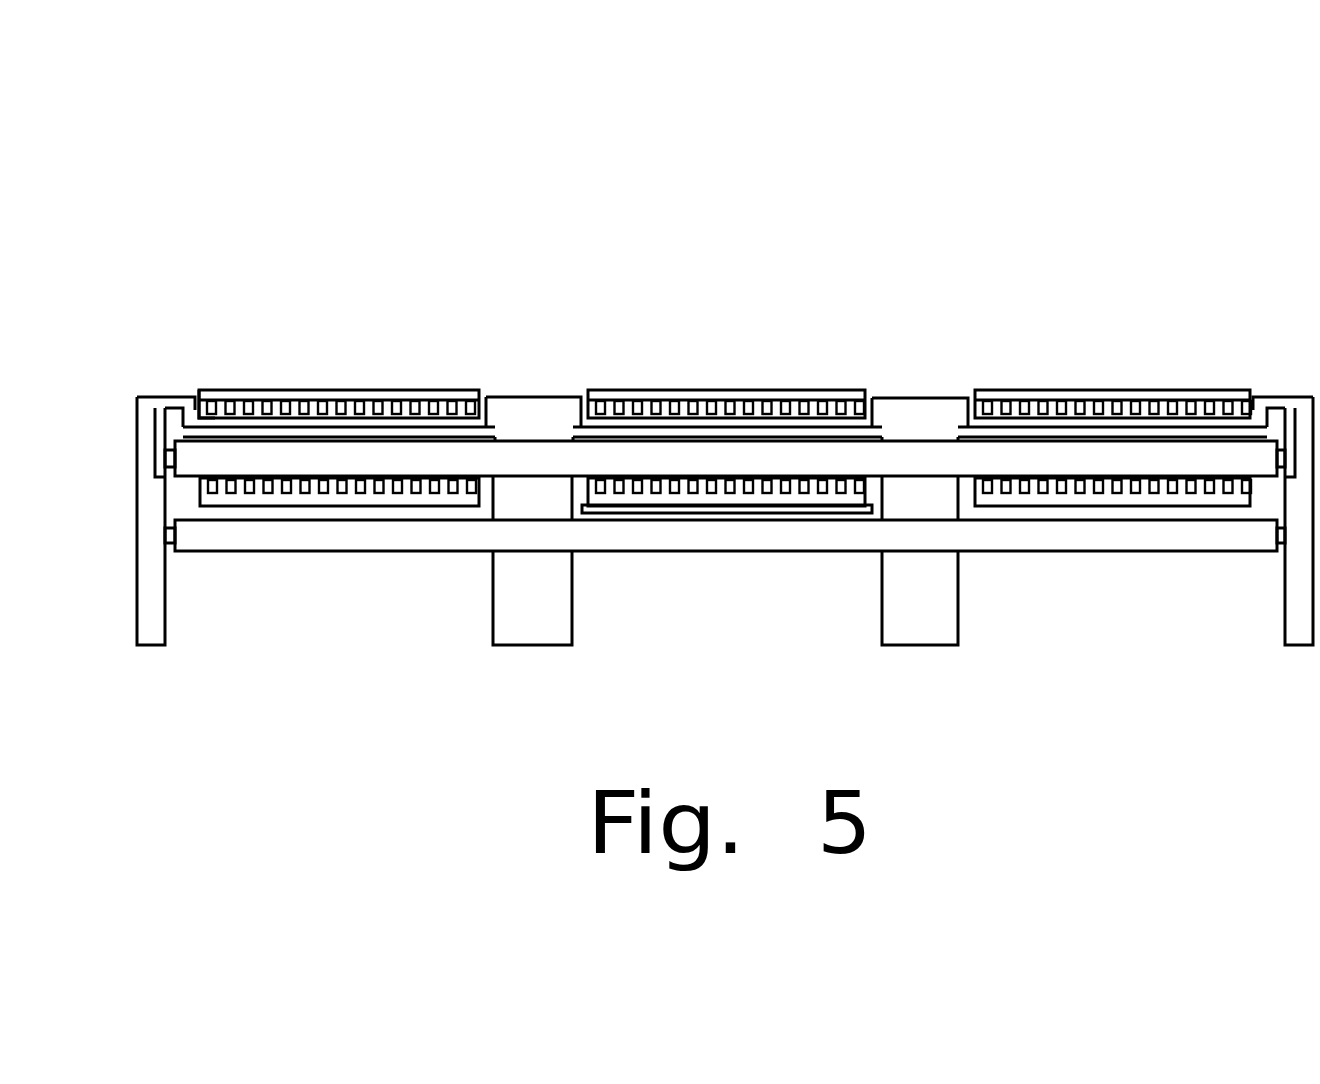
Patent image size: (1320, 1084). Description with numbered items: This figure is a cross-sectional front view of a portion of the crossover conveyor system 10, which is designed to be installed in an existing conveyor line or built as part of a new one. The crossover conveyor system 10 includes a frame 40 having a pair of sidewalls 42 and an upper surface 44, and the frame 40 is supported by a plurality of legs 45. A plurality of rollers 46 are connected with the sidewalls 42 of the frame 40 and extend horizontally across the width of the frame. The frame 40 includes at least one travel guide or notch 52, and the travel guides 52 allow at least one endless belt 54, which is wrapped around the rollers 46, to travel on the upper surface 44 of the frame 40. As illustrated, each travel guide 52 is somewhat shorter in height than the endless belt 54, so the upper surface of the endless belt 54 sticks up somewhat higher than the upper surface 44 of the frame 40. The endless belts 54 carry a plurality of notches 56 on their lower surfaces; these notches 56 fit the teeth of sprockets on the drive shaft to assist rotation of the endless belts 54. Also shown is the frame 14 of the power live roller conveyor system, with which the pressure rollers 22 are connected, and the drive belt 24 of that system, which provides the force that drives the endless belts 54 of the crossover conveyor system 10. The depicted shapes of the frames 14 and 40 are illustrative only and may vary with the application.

The crossover conveyor system 10 is at (738, 298).
The frame 14 is at (146, 542).
The pressure rollers 22 is at (1140, 535).
The drive belt 24 is at (590, 512).
The frame 40 is at (535, 407).
The sidewalls 42 is at (136, 397).
The upper surface 44 is at (917, 397).
The legs 45 is at (492, 602).
The rollers 46 is at (315, 457).
The travel guide 52 is at (202, 408).
The endless belt 54 is at (713, 458).
The notches 56 is at (427, 407).